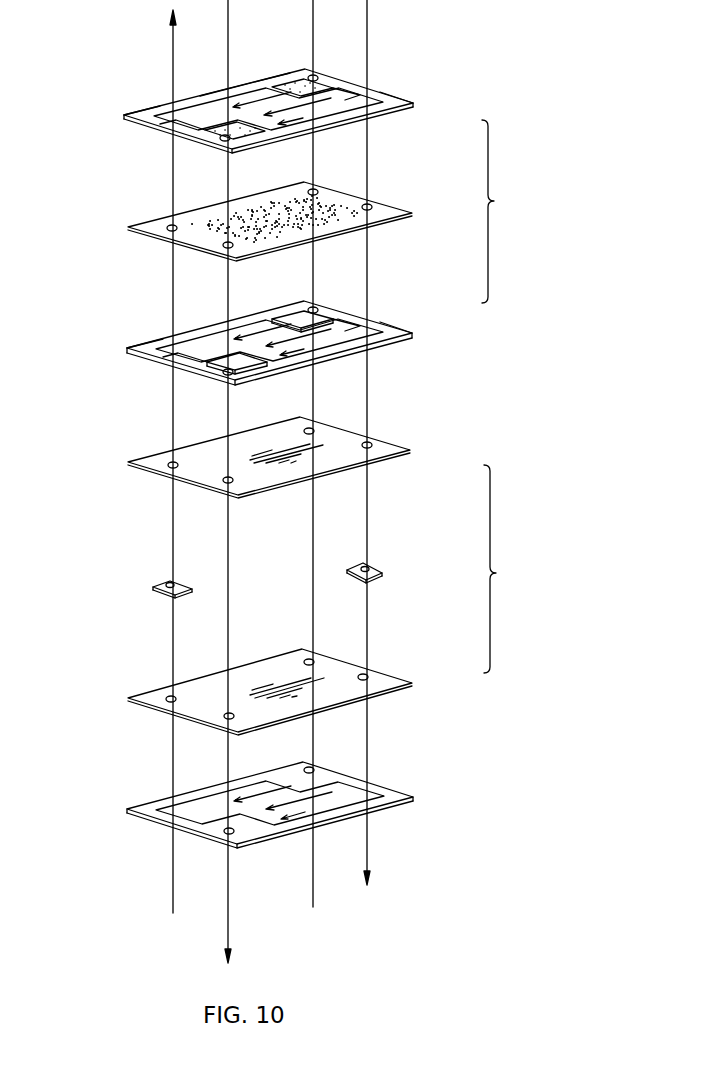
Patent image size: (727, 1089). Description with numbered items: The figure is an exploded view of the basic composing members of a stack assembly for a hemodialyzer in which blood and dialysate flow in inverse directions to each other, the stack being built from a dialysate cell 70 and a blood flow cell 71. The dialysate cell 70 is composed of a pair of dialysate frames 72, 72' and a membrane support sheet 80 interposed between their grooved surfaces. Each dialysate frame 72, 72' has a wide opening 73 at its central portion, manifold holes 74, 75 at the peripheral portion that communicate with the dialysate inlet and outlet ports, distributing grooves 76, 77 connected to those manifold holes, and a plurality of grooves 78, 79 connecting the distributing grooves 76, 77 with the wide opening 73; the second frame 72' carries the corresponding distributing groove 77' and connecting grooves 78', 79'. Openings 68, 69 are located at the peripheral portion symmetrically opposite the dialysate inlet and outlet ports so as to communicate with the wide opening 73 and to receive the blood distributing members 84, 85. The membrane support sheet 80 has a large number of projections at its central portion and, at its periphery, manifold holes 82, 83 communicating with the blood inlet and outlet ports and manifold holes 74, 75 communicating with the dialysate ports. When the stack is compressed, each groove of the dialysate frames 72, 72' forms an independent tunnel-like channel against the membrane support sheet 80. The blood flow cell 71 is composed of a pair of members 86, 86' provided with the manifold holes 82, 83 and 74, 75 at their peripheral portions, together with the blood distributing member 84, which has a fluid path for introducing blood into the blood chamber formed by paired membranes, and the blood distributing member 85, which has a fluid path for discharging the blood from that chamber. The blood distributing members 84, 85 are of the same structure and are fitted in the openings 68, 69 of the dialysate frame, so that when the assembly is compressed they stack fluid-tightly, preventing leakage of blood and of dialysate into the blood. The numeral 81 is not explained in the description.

The opening 68 is at (133, 118).
The opening 69 is at (383, 97).
The dialysate cell 70 is at (507, 211).
The blood flow cell 71 is at (509, 569).
The dialysate frame 72 is at (304, 458).
The dialysate frame 72' is at (307, 332).
The wide opening 73 is at (285, 75).
The manifold hole 74 is at (316, 76).
The manifold hole 75 is at (230, 142).
The distributing groove 76 is at (345, 78).
The distributing groove 77 is at (220, 159).
The distributing groove 77' is at (223, 391).
The connecting groove 78 is at (340, 75).
The connecting groove 78' is at (343, 311).
The connecting groove 79 is at (166, 152).
The connecting groove 79' is at (171, 388).
The membrane support sheet 80 is at (413, 213).
The perforations 81 is at (320, 222).
The manifold hole 82 is at (170, 231).
The manifold hole 83 is at (370, 205).
The blood distributing member 84 is at (153, 587).
The blood distributing member 85 is at (382, 573).
The member of blood flow cell 86 is at (304, 459).
The member of blood flow cell 86' is at (307, 691).